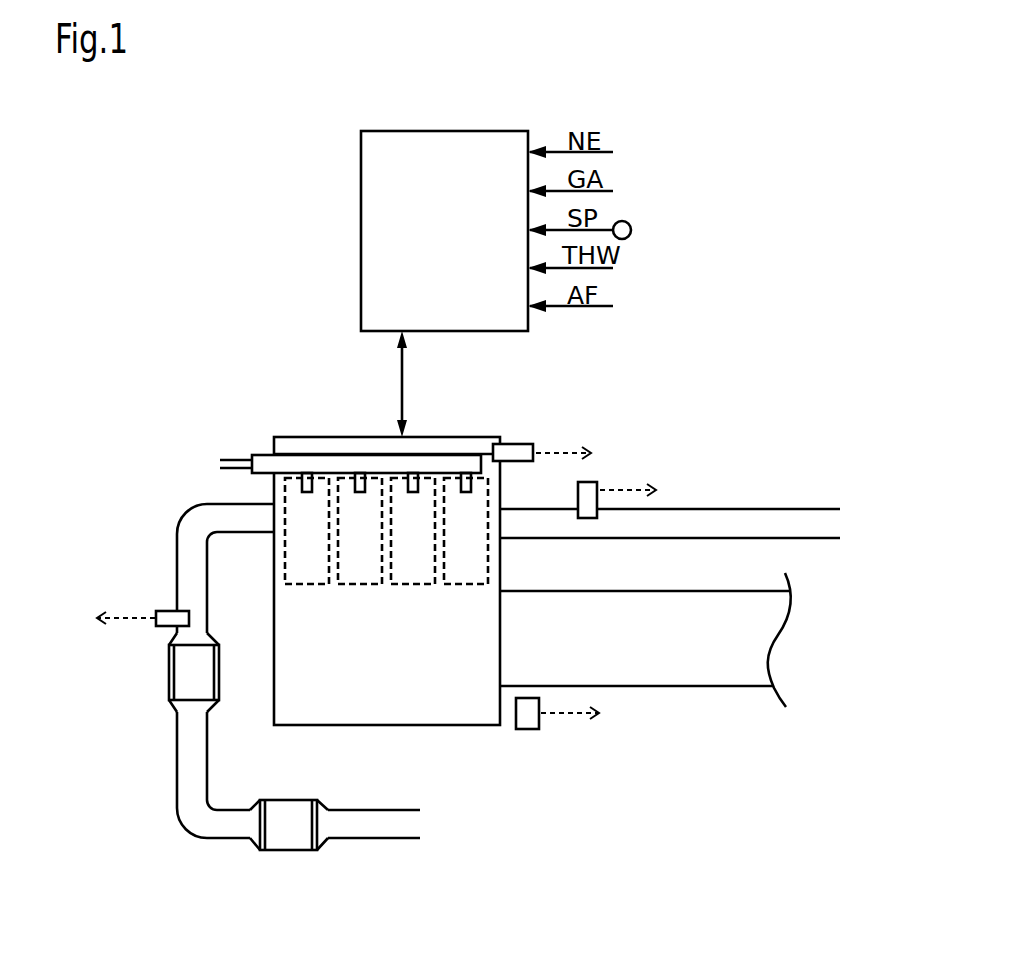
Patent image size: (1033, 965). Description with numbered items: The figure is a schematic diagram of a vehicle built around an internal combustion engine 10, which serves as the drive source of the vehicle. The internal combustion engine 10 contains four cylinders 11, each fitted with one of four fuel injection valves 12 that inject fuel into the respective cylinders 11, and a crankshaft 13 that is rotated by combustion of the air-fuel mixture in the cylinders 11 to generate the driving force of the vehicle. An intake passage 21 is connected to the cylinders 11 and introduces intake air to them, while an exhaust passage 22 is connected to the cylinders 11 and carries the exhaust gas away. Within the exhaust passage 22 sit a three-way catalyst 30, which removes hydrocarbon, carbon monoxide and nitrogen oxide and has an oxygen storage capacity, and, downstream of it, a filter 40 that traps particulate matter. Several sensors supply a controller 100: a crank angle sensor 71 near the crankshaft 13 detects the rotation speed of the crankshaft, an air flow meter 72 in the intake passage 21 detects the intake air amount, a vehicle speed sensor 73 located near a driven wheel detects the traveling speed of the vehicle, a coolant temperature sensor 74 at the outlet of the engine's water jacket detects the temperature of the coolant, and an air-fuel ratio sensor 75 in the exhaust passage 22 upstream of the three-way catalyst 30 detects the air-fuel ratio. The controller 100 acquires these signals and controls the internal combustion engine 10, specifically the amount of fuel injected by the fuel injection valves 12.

The controller 100 is at (361, 226).
The vehicle speed sensor 73 is at (632, 230).
The internal combustion engine 10 is at (312, 437).
The cylinder 11 is at (458, 608).
The fuel injection valve 12 is at (462, 516).
The coolant temperature sensor 74 is at (510, 444).
The intake passage 21 is at (772, 509).
The air flow meter 72 is at (578, 498).
The crankshaft 13 is at (588, 591).
The crank angle sensor 71 is at (530, 730).
The exhaust passage 22 is at (177, 578).
The air-fuel ratio sensor 75 is at (190, 617).
The three-way catalyst 30 is at (169, 679).
The filter 40 is at (288, 851).